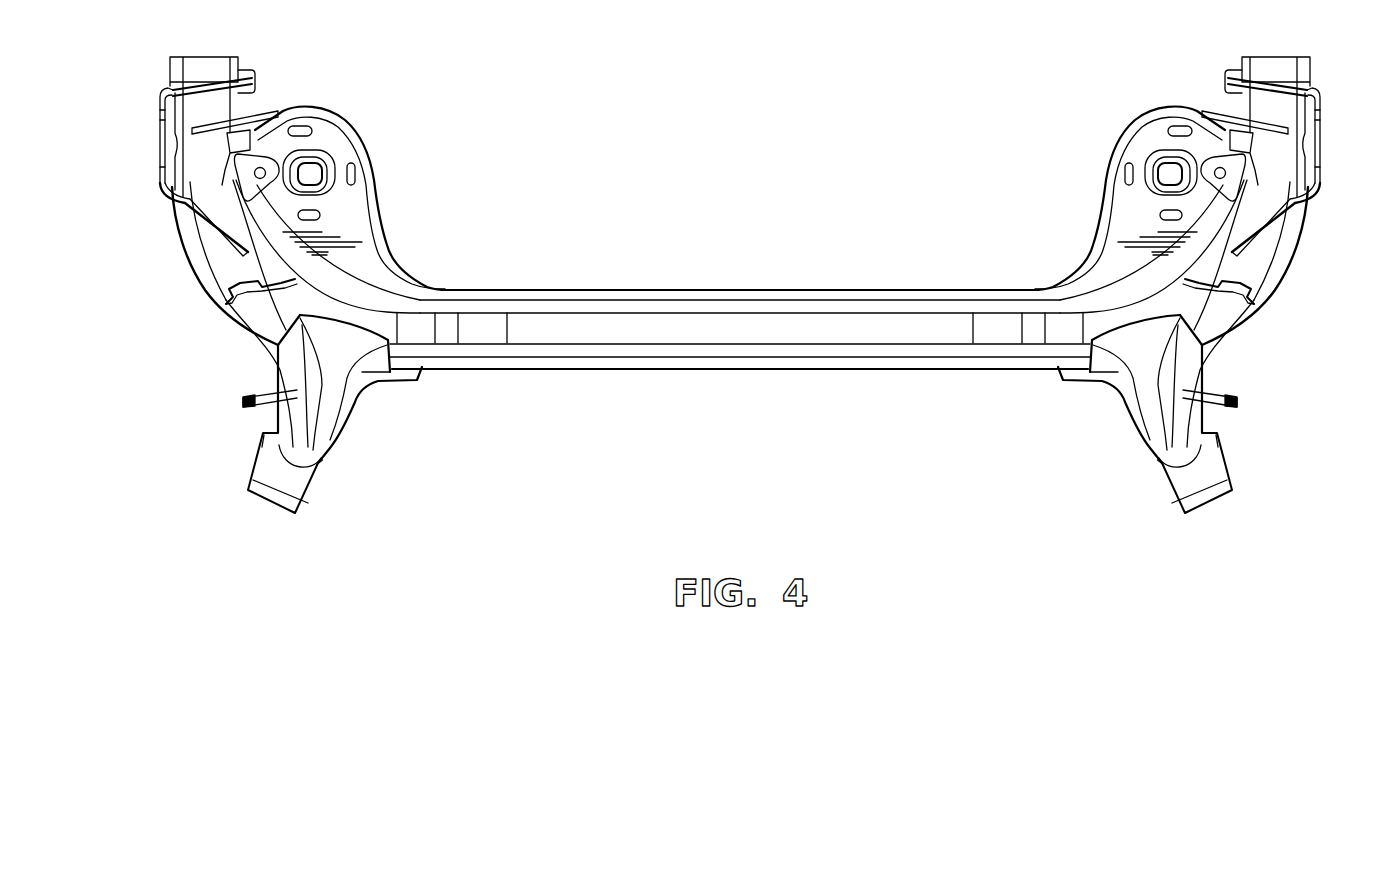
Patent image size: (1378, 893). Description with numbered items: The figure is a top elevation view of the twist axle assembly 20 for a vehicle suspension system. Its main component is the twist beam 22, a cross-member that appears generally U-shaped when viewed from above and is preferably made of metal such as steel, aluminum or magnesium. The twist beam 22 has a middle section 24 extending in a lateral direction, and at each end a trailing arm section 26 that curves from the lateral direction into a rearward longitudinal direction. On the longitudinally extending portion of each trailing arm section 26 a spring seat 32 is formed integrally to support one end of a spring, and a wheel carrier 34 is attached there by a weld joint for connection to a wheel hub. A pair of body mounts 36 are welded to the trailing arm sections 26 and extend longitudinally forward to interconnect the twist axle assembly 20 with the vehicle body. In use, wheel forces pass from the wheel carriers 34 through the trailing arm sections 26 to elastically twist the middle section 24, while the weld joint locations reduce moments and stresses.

The twist axle assembly 20 is at (753, 226).
The twist beam 22 is at (827, 288).
The middle section 24 is at (907, 332).
The trailing arm section 26 is at (220, 247).
The spring seat 32 is at (330, 137).
The wheel carrier 34 is at (162, 182).
The body mount 36 is at (290, 492).